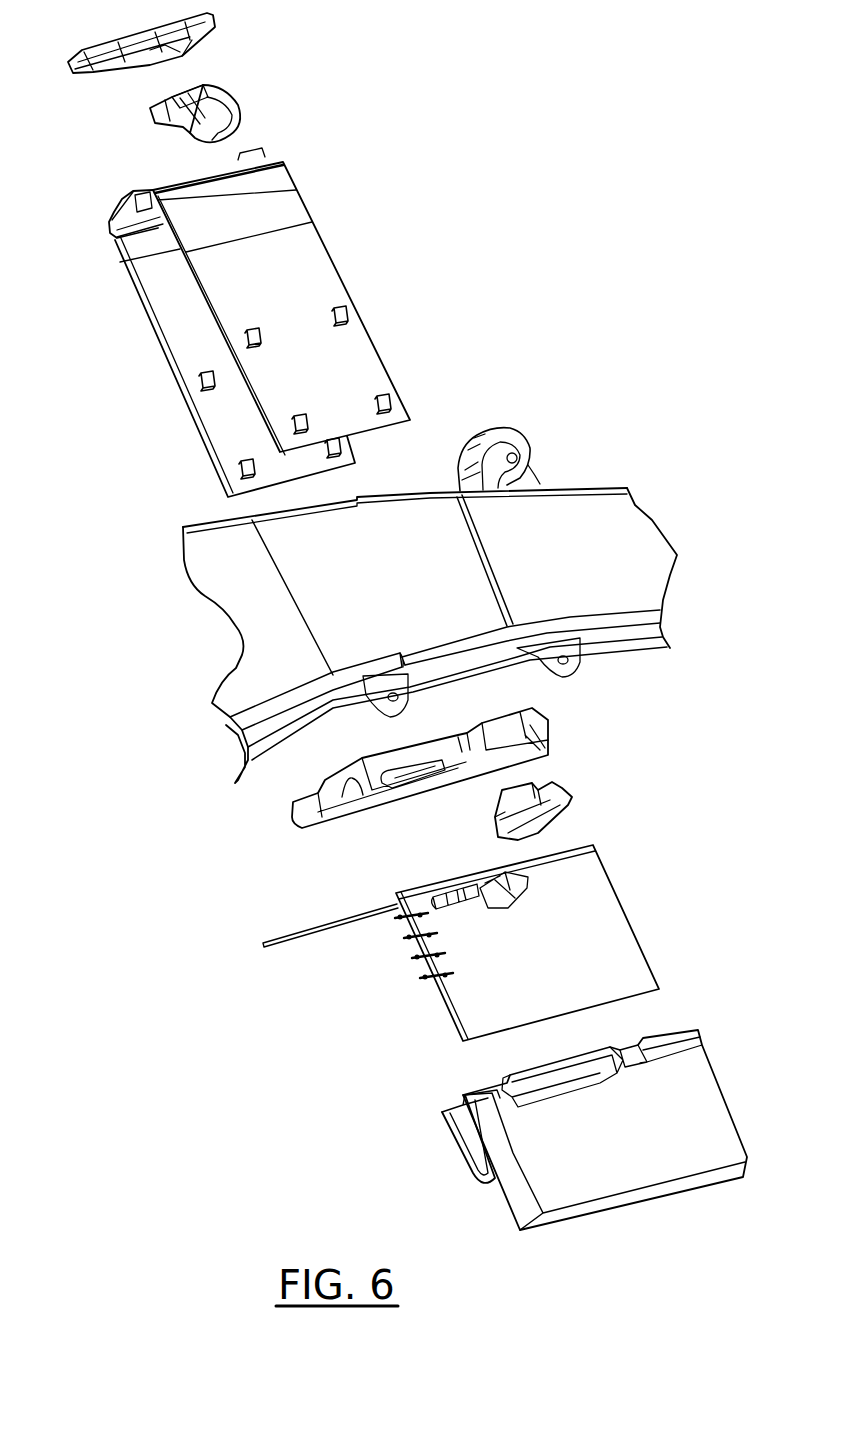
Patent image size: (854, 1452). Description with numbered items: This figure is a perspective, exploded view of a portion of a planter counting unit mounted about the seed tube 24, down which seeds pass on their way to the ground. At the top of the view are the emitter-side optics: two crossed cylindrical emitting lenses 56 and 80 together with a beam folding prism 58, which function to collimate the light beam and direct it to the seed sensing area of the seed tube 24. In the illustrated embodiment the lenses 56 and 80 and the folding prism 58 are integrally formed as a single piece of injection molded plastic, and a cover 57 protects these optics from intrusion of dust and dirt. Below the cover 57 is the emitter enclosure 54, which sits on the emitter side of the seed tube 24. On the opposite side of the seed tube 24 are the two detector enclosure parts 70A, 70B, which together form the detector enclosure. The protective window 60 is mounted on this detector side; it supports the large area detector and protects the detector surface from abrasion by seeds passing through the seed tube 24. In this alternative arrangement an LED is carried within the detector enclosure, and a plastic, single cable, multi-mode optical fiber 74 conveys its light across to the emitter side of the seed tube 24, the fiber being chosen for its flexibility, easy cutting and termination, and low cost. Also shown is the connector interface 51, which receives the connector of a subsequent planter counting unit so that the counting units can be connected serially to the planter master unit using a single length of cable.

The cover 57 is at (213, 11).
The beam folding prism 58 is at (213, 82).
The cylindrical emitting lens 56 is at (155, 105).
The cylindrical emitting lens 80 is at (238, 125).
The emitter enclosure 54 is at (307, 240).
The seed tube 24 is at (590, 503).
The detector enclosure part 70B is at (548, 723).
The protective window 60 is at (557, 782).
The optical fiber 74 is at (295, 940).
The connector interface 51 is at (460, 1177).
The detector enclosure part 70A is at (667, 1180).